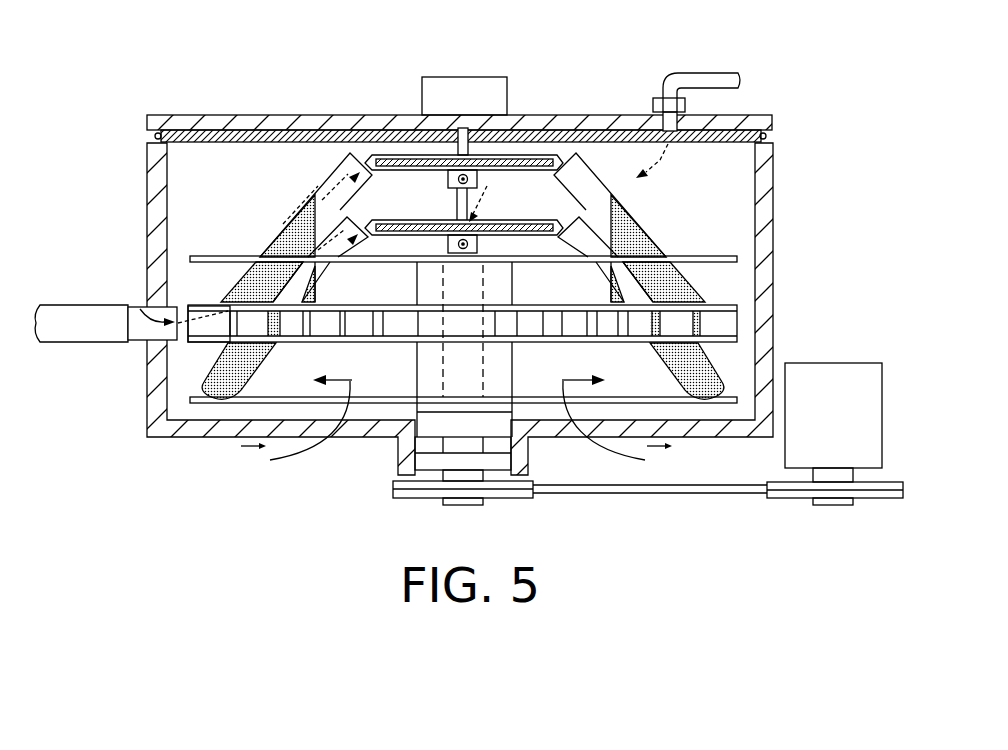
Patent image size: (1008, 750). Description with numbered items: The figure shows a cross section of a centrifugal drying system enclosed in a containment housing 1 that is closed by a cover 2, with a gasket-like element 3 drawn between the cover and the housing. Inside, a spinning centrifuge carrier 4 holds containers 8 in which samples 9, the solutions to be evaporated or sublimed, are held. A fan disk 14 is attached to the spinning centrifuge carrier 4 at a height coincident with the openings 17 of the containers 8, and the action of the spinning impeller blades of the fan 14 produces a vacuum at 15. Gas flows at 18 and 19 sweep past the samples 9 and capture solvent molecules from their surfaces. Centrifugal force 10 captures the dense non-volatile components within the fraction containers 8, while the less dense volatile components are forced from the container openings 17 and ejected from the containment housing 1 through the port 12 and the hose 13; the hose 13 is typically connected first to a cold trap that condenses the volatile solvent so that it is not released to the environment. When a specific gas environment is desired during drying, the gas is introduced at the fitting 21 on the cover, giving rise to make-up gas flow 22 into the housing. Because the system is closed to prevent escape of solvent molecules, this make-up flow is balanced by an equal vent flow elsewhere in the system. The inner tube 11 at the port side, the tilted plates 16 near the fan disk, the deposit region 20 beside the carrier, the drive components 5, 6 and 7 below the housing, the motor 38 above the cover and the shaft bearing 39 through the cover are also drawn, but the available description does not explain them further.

The containment housing 1 is at (147, 170).
The cover 2 is at (212, 115).
The seal 3 is at (199, 143).
The centrifuge carrier 4 is at (708, 256).
The pulley 5 is at (393, 484).
The belt 6 is at (598, 485).
The drive motor 7 is at (785, 458).
The container 8 is at (602, 170).
The sample 9 is at (680, 383).
The centrifugal force 10 is at (235, 470).
The inlet tube 11 is at (198, 310).
The port 12 is at (140, 309).
The hose 13 is at (68, 312).
The fan disk 14 is at (368, 157).
The vacuum 15 is at (486, 180).
The lower cone plate 16 is at (378, 215).
The container opening 17 is at (358, 217).
The gas-flow 18 is at (373, 240).
The gas-flow 19 is at (325, 268).
The deposit 20 is at (285, 224).
The fitting 21 is at (652, 110).
The gas-flow 22 is at (655, 170).
The motor 38 is at (466, 77).
The shaft bearing 39 is at (450, 147).